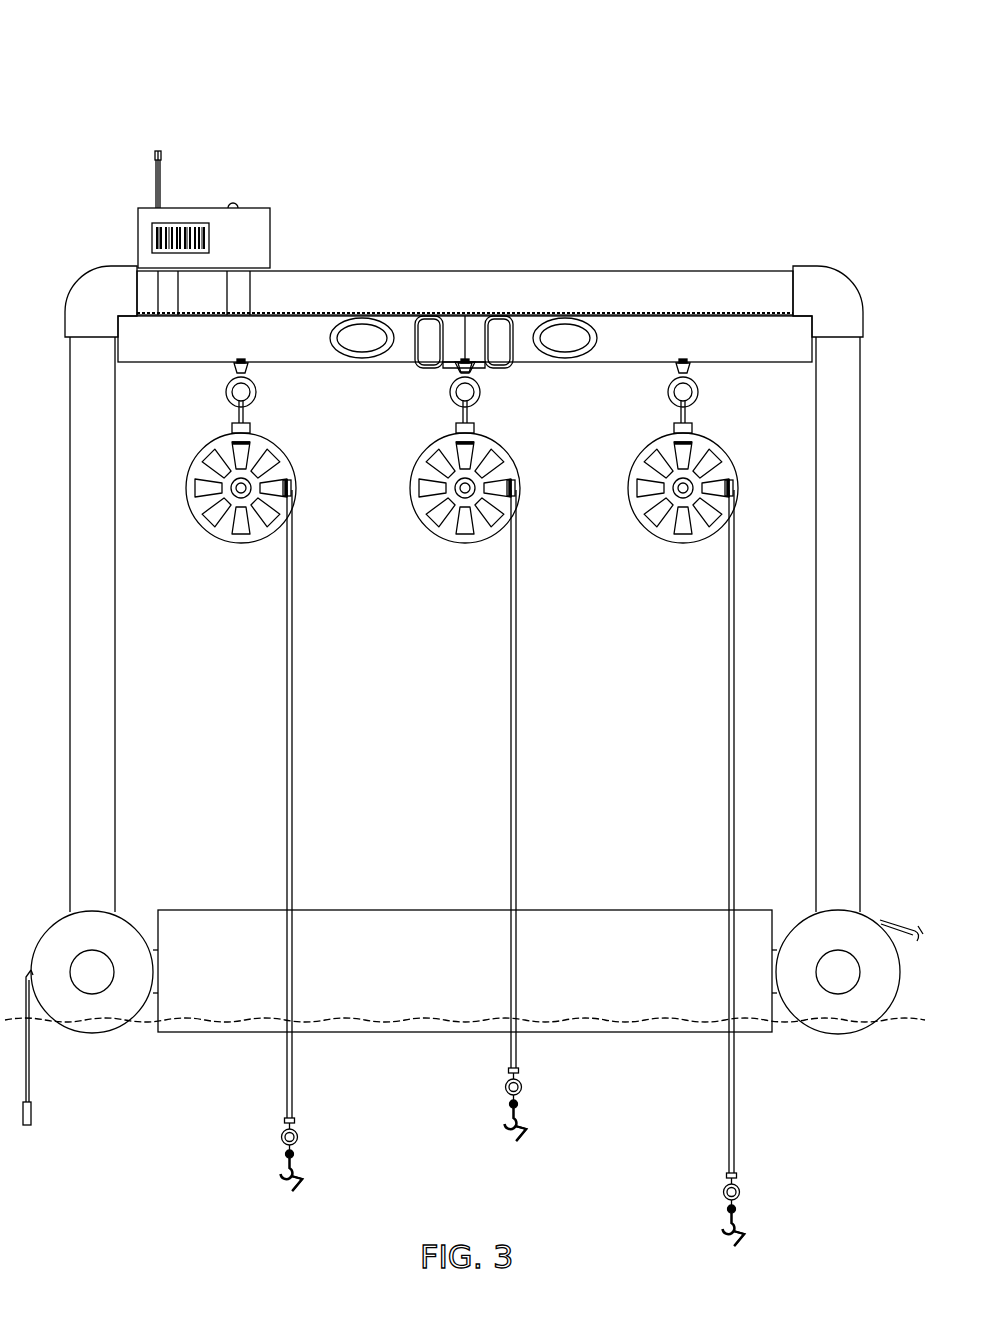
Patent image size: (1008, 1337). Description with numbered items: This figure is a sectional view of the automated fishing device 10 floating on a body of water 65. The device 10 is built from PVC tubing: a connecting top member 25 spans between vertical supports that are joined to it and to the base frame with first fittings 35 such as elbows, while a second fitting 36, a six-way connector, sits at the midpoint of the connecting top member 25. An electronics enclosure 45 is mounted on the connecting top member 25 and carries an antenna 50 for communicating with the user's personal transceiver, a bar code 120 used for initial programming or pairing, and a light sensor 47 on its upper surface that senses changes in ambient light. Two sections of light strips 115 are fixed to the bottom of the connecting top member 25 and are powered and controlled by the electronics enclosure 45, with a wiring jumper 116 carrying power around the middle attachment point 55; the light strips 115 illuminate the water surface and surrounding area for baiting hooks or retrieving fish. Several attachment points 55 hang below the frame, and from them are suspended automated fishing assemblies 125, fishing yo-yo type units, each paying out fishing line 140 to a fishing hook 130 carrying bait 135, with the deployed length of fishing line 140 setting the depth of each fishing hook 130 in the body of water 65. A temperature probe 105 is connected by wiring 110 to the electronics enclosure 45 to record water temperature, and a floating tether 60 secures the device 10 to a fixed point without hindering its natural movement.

The automated fishing device 10 is at (110, 173).
The connecting top member 25 is at (440, 277).
The first fitting 35 is at (98, 300).
The second fitting 36 is at (452, 361).
The electronics enclosure 45 is at (268, 248).
The light sensor 47 is at (236, 207).
The antenna 50 is at (160, 153).
The attachment point 55 is at (256, 392).
The tether 60 is at (903, 921).
The body of water 65 is at (149, 1022).
The temperature probe 105 is at (30, 1113).
The wiring 110 is at (28, 1053).
The light strip 115 is at (608, 313).
The wiring jumper 116 is at (508, 370).
The bar code 120 is at (152, 238).
The automated fishing assembly 125 is at (228, 535).
The fishing hook 130 is at (300, 1153).
The bait 135 is at (298, 1180).
The fishing line 140 is at (517, 870).